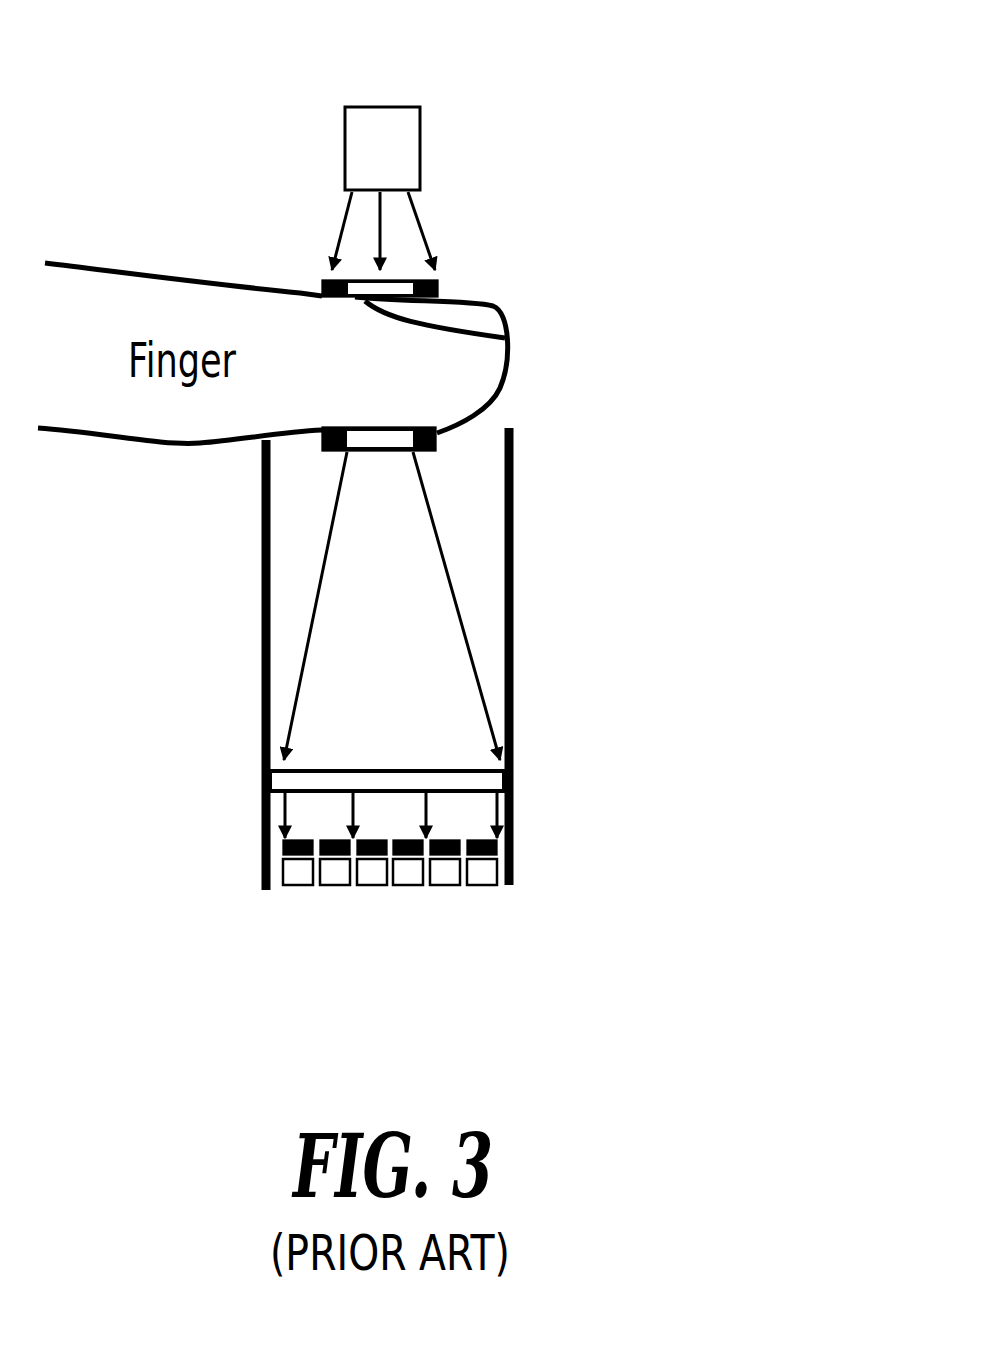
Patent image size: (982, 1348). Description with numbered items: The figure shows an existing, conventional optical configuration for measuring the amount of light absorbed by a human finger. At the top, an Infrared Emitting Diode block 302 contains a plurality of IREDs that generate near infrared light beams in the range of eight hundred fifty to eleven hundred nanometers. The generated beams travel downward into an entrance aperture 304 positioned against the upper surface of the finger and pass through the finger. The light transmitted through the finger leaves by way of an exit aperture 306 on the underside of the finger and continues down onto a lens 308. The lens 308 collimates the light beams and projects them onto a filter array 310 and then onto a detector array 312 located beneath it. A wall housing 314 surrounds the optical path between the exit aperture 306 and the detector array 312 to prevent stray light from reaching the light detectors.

The Infrared Emitting Diode block 302 is at (420, 160).
The entrance aperture 304 is at (438, 282).
The exit aperture 306 is at (437, 436).
The lens 308 is at (513, 770).
The filter array 310 is at (515, 845).
The detector array 312 is at (483, 872).
The wall housing 314 is at (512, 517).